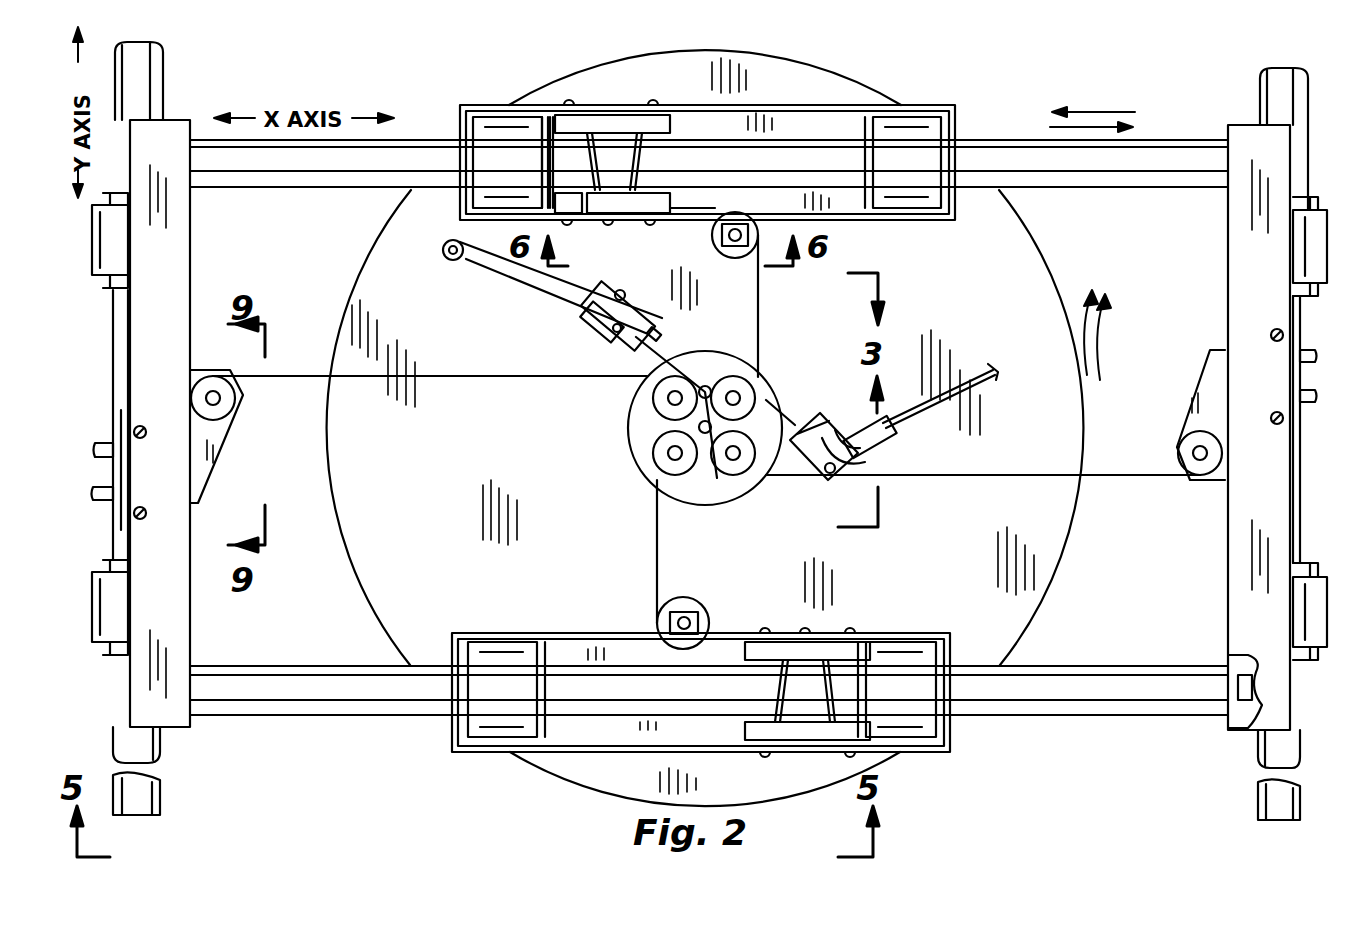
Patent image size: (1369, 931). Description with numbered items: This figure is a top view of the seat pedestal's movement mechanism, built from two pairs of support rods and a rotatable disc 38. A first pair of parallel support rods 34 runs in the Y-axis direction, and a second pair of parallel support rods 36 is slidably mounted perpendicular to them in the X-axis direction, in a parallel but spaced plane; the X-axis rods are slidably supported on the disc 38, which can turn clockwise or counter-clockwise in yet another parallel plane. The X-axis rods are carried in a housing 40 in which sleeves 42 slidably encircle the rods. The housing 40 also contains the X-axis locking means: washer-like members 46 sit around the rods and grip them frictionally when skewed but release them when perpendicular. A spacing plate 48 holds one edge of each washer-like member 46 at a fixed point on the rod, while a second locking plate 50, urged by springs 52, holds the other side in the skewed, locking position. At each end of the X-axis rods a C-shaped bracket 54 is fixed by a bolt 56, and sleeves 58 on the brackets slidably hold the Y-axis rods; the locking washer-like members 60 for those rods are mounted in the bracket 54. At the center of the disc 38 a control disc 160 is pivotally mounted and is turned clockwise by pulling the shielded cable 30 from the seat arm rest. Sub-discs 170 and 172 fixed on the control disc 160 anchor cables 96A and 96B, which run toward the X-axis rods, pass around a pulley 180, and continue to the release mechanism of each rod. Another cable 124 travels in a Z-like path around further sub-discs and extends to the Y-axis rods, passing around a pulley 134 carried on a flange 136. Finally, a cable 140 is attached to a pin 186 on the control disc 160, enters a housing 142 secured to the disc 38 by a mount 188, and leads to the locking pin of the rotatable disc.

The shielded cable 30 is at (972, 385).
The first pair of parallel support rods 34 is at (150, 44).
The second pair of parallel support rods 36 is at (1174, 147).
The rotatable disc 38 is at (1007, 230).
The housing 40 is at (923, 107).
The sleeves 42 is at (498, 117).
The washer-like members 46 is at (637, 130).
The spacing plate 48 is at (566, 118).
The second locking plate 50 is at (655, 212).
The springs 52 is at (580, 210).
The bracket 54 is at (165, 132).
The bolt 56 is at (1240, 728).
The sleeves 58 is at (92, 237).
The locking washer-like members 60 is at (105, 446).
The cable 96A is at (657, 580).
The cable 96B is at (760, 323).
The cable 124 is at (306, 376).
The pulley 134 is at (235, 398).
The flange 136 is at (218, 450).
The cable 140 is at (660, 354).
The housing 142 is at (497, 266).
The control disc 160 is at (712, 495).
The sub-disc 170 is at (752, 397).
The sub-disc 172 is at (660, 459).
The pulley 180 is at (732, 258).
The pin 186 is at (704, 386).
The mount 188 is at (603, 326).